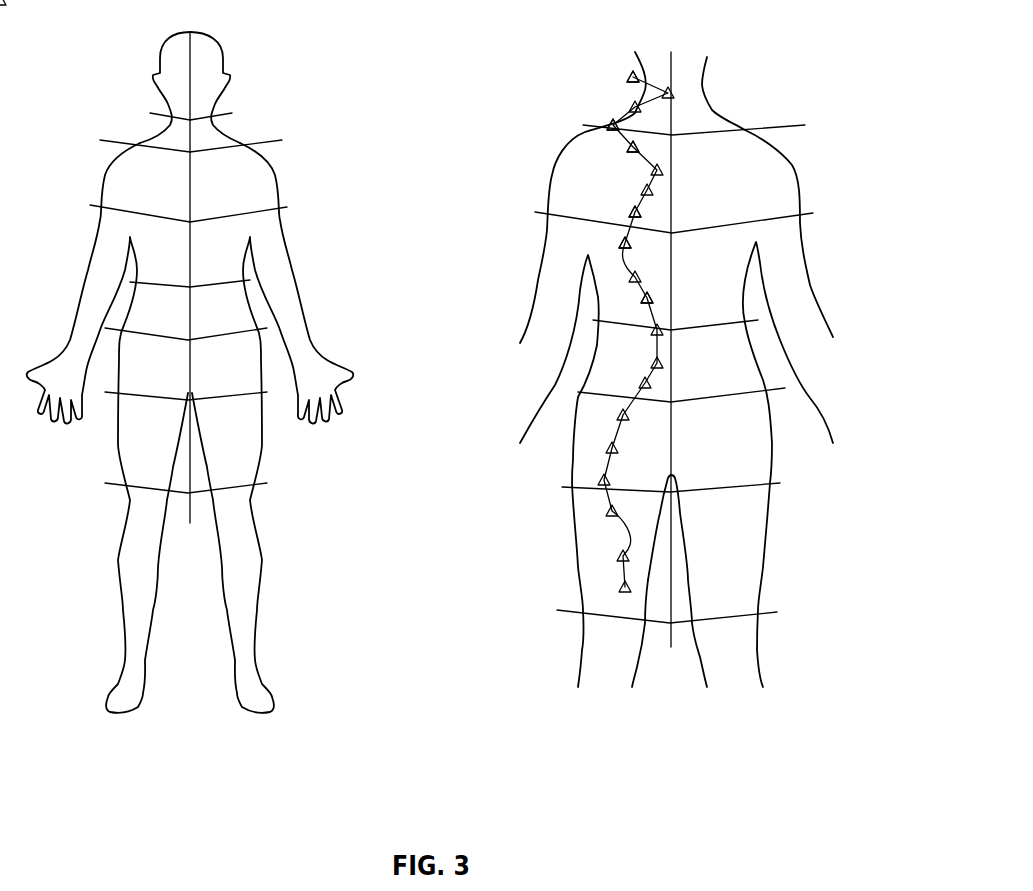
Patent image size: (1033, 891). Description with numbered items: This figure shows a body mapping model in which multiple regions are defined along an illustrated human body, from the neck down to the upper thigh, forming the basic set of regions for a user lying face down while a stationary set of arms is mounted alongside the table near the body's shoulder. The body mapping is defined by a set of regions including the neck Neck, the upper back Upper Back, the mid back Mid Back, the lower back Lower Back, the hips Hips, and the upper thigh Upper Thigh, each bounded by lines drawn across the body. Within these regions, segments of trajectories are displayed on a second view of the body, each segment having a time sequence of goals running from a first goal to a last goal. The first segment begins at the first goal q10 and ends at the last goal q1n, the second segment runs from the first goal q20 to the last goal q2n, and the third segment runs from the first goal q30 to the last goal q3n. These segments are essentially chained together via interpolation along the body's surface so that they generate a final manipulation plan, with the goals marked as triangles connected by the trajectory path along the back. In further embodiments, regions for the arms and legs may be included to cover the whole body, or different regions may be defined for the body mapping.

The neck region Neck is at (208, 132).
The upper back region Upper Back is at (220, 183).
The mid back region Mid Back is at (208, 248).
The lower back region Lower Back is at (215, 305).
The hips region Hips is at (220, 360).
The upper thigh region Upper Thigh is at (220, 435).
The first goal of trajectory segment q1 q10 is at (628, 76).
The last goal of trajectory segment q1 q1n is at (610, 123).
The first goal of trajectory segment q2 q20 is at (628, 150).
The last goal of trajectory segment q2 q2n is at (630, 214).
The first goal of trajectory segment q3 q30 is at (620, 245).
The last goal of trajectory segment q3 q3n is at (642, 299).